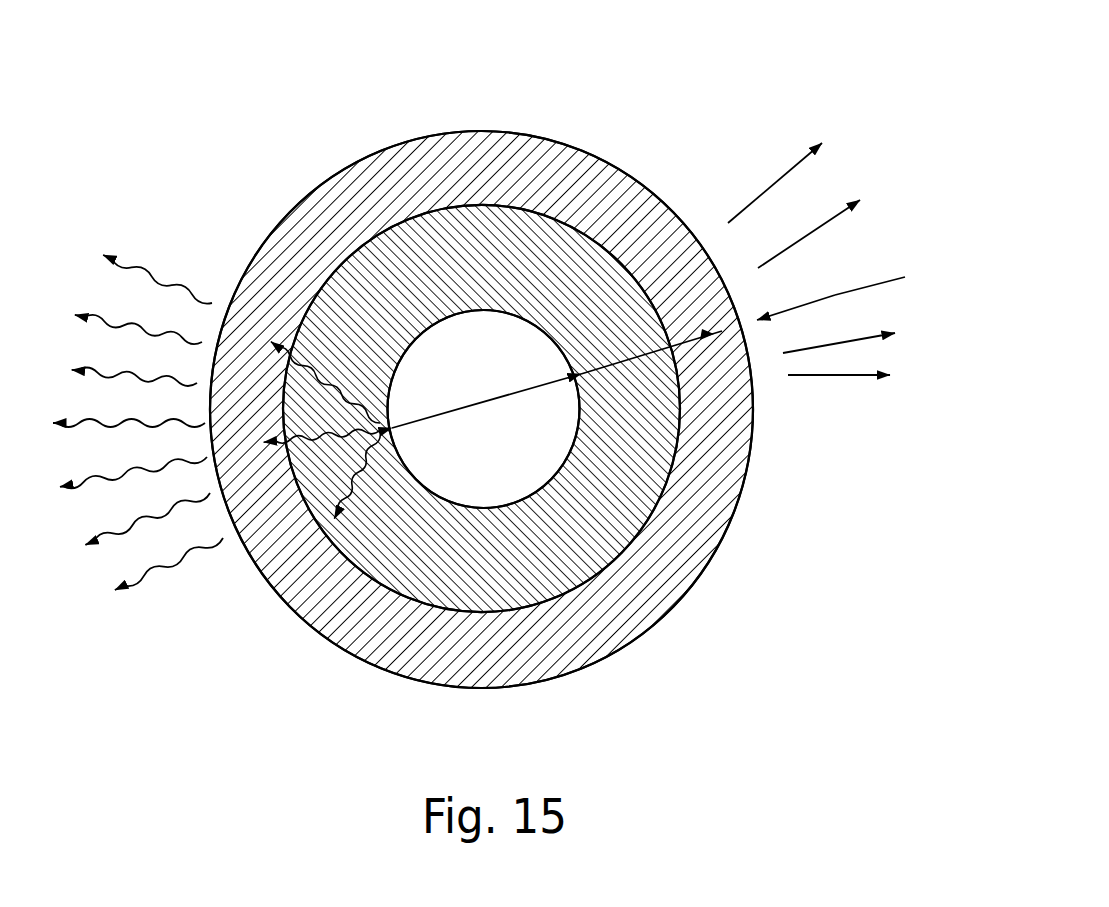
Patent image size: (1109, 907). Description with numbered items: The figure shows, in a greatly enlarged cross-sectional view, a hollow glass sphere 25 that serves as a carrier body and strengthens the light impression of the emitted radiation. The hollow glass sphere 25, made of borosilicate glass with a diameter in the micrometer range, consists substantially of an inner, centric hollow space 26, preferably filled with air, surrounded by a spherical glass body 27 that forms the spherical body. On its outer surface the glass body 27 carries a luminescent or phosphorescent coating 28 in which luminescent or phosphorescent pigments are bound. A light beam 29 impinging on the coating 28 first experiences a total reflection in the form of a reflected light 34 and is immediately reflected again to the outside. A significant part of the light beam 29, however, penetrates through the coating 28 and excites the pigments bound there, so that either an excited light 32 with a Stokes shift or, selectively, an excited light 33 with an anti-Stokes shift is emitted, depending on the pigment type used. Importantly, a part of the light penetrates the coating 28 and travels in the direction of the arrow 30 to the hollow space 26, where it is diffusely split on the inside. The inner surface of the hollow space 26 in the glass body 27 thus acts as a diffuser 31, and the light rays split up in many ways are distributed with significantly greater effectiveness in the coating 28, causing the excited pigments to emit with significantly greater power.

The hollow glass sphere 25 is at (647, 157).
The hollow space 26 is at (502, 467).
The glass body 27 is at (643, 465).
The luminescent or phosphorescent coating 28 is at (685, 570).
The light beam 29 is at (835, 295).
The arrow 30 is at (672, 358).
The diffuser 31 is at (380, 427).
The excited light with Stokes shift 32 is at (187, 327).
The excited light with anti-Stokes shift 33 is at (143, 523).
The reflected light 34 is at (802, 237).